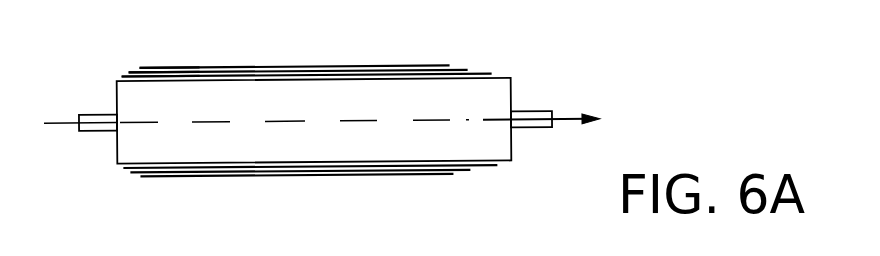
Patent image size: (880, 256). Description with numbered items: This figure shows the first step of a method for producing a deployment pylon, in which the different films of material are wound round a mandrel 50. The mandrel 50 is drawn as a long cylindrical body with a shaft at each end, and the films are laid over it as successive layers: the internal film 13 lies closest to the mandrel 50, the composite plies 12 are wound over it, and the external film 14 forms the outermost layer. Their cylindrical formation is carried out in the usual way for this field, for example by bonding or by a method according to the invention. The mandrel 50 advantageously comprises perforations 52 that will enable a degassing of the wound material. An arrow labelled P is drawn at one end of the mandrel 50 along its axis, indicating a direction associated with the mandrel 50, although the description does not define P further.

The mandrel 50 is at (500, 154).
The perforations 52 is at (168, 69).
The composite plies 12 is at (468, 70).
The internal film 13 is at (493, 75).
The external film 14 is at (441, 66).
The pull direction arrow P is at (564, 116).